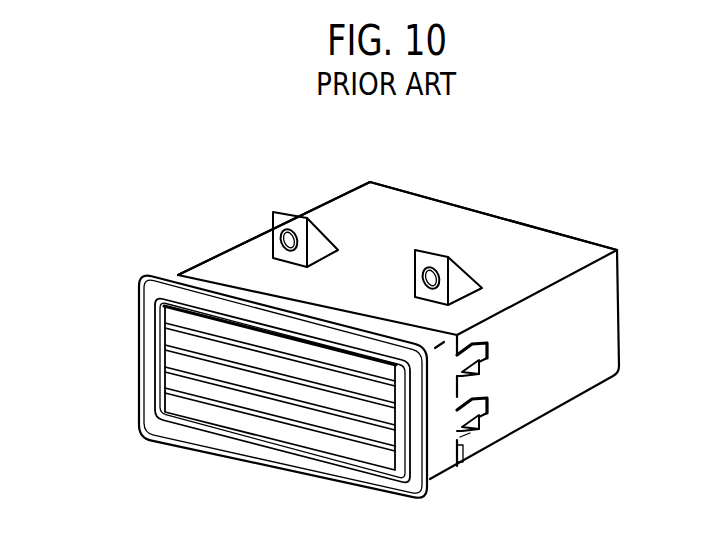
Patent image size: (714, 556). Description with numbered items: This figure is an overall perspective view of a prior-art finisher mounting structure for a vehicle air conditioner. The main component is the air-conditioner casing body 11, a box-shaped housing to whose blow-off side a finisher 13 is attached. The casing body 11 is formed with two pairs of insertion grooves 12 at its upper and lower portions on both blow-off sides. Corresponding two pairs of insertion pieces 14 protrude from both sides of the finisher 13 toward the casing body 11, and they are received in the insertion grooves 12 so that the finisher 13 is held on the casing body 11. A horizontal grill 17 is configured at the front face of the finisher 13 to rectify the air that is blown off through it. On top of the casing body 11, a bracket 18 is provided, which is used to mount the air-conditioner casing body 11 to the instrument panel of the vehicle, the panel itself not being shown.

The air-conditioner casing body 11 is at (564, 236).
The insertion groove 12 is at (472, 436).
The finisher 13 is at (135, 341).
The insertion piece 14 is at (488, 352).
The horizontal grill 17 is at (300, 442).
The bracket 18 is at (288, 212).